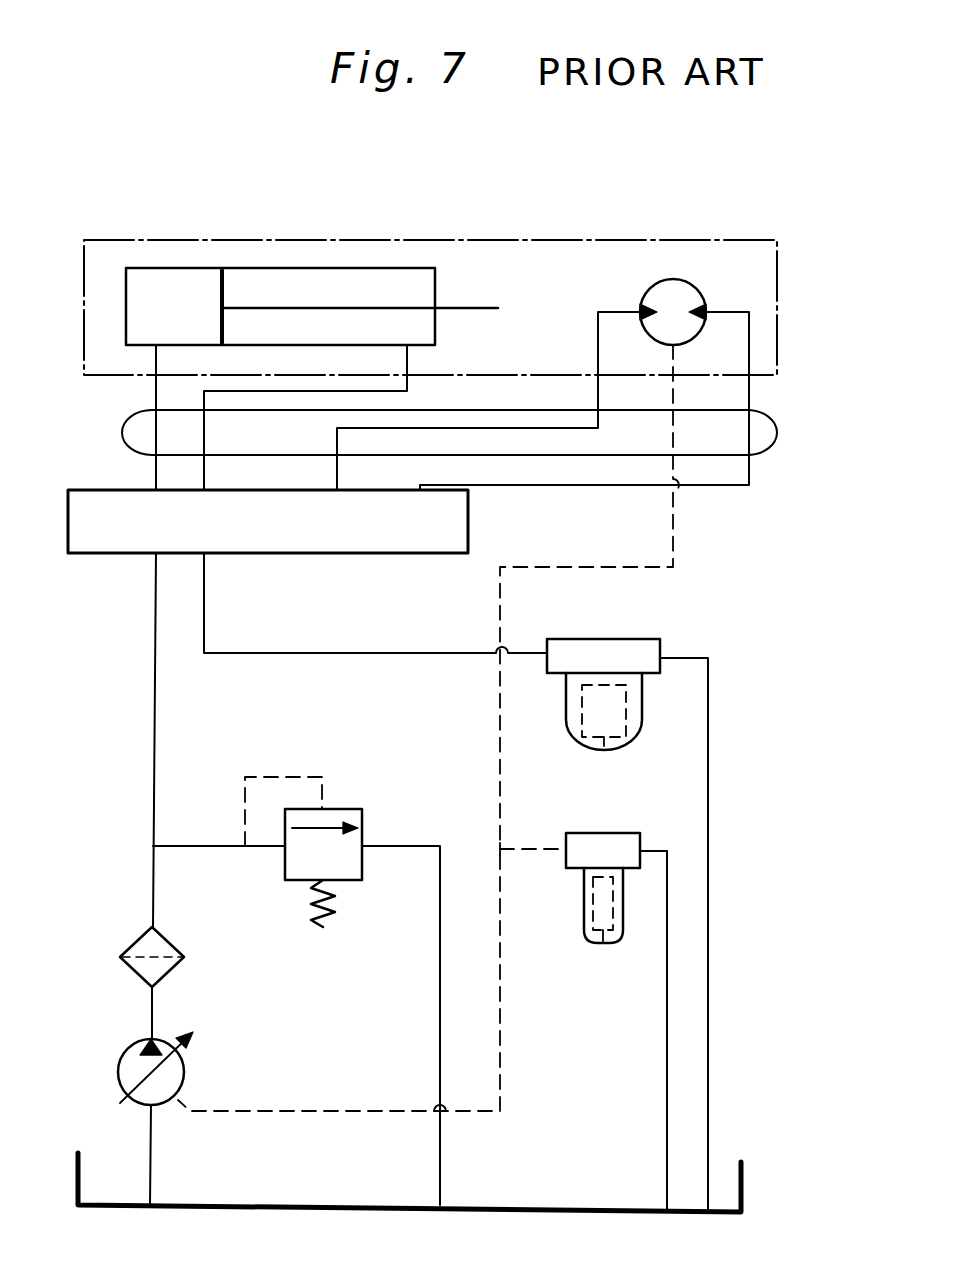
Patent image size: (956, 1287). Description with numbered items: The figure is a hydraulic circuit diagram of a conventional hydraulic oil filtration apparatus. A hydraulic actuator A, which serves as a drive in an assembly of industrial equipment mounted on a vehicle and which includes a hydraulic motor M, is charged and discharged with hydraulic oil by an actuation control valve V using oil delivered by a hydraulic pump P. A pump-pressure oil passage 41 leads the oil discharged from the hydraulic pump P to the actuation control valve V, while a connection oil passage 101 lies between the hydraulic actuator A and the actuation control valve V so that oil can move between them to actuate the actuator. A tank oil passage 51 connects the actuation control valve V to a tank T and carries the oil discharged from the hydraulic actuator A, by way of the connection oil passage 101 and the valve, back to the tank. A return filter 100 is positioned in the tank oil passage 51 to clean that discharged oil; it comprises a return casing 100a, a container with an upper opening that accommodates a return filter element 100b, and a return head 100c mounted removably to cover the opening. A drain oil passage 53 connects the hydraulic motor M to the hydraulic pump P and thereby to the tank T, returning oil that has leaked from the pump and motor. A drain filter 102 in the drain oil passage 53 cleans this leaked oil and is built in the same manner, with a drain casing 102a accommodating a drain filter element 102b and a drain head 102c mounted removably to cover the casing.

The hydraulic actuator A is at (555, 242).
The hydraulic motor M is at (692, 285).
The actuation control valve V is at (268, 521).
The hydraulic pump P is at (118, 1073).
The tank T is at (77, 1180).
The connection oil passage 101 is at (126, 428).
The pump-pressure oil passage 41 is at (153, 768).
The tank oil passage 51 is at (360, 653).
The drain oil passage 53 is at (500, 752).
The return filter 100 is at (636, 902).
The return casing 100a is at (641, 720).
The return filter element 100b is at (606, 750).
The return head 100c is at (658, 638).
The drain filter 102 is at (591, 999).
The drain casing 102a is at (582, 890).
The drain filter element 102b is at (606, 945).
The drain head 102c is at (640, 843).